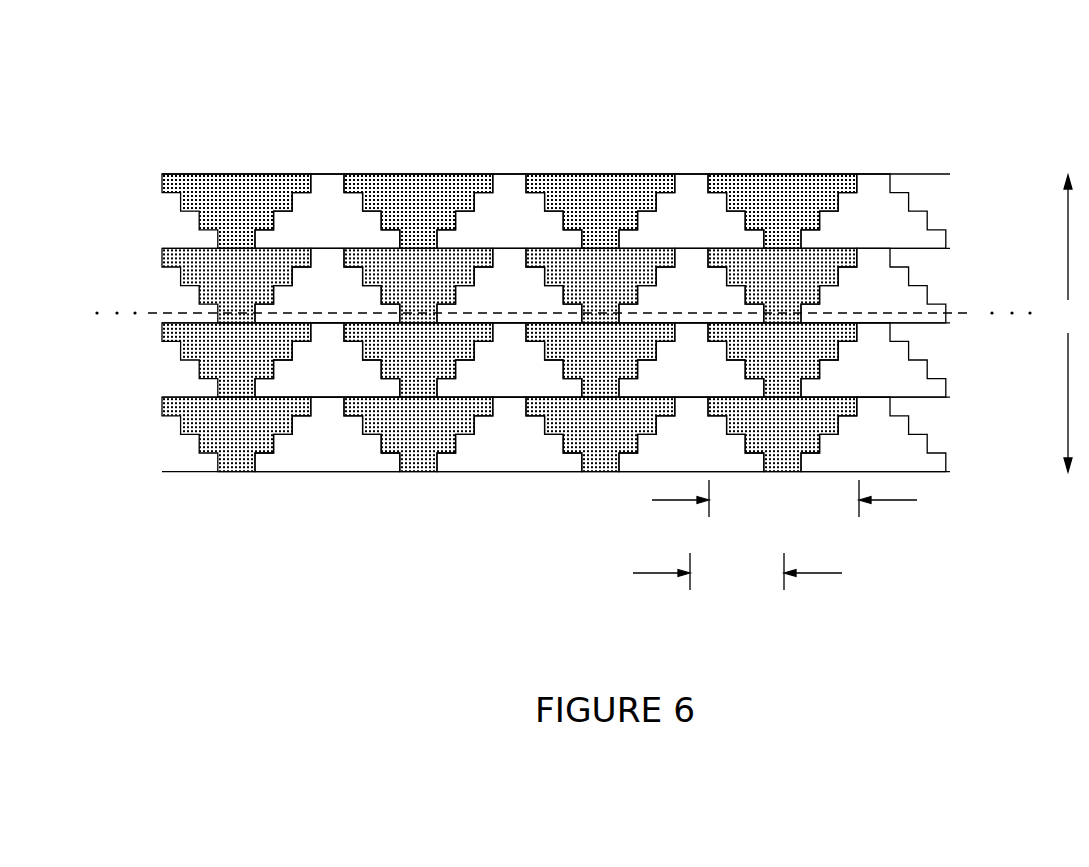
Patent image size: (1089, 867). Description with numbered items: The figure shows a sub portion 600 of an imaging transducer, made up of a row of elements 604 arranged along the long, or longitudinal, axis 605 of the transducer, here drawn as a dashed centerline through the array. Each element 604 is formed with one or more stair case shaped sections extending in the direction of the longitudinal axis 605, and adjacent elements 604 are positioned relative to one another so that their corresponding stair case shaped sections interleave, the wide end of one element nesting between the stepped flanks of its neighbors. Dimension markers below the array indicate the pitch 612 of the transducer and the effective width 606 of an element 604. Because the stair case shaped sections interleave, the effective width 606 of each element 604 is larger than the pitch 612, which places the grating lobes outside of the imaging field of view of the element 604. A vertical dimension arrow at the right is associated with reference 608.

The sub portion 600 is at (180, 53).
The elements 604 is at (214, 129).
The longitudinal axis 605 is at (158, 312).
The effective width 606 is at (821, 539).
The height H of grating 608 is at (1035, 147).
The pitch 612 is at (767, 610).